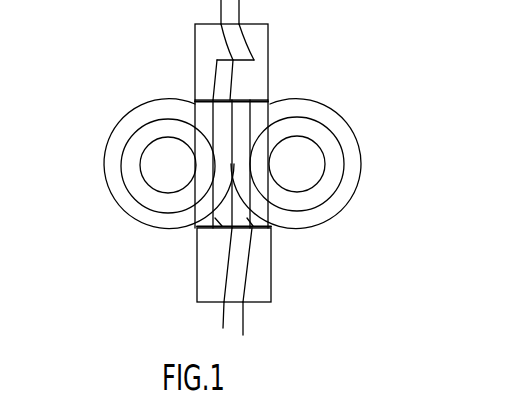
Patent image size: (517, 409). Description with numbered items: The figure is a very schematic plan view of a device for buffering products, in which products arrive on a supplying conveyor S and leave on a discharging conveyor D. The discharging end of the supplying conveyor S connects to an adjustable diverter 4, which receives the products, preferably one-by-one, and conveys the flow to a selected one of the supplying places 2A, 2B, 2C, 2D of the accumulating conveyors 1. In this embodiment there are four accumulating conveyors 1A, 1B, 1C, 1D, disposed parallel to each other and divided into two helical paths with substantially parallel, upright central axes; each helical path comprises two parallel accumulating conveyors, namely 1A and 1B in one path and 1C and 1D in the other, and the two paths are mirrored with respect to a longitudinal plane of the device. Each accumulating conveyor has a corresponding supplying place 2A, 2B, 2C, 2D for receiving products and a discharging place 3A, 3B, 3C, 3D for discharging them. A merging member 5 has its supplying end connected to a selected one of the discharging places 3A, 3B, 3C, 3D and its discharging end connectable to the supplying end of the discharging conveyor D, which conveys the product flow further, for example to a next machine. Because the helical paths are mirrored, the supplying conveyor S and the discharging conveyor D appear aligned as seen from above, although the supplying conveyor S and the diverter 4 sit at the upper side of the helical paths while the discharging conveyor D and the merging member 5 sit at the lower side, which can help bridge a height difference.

The supplying conveyor S is at (222, 12).
The adjustable diverter 4 is at (292, 36).
The merging member 5 is at (297, 270).
The accumulating conveyors 1 is at (359, 114).
The accumulating conveyor 1A is at (345, 143).
The accumulating conveyor 1B is at (333, 173).
The accumulating conveyor 1C is at (133, 165).
The accumulating conveyor 1D is at (122, 137).
The supplying place 2A is at (256, 107).
The supplying place 2B is at (259, 107).
The supplying place 2C is at (203, 107).
The supplying place 2D is at (220, 107).
The discharging place 3A is at (272, 237).
The discharging place 3B is at (258, 220).
The discharging place 3C is at (212, 217).
The discharging place 3D is at (200, 229).
The discharging conveyor D is at (232, 315).